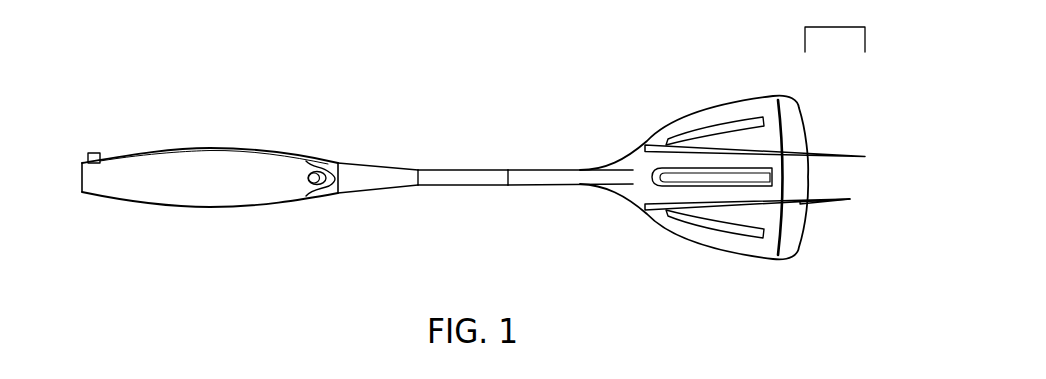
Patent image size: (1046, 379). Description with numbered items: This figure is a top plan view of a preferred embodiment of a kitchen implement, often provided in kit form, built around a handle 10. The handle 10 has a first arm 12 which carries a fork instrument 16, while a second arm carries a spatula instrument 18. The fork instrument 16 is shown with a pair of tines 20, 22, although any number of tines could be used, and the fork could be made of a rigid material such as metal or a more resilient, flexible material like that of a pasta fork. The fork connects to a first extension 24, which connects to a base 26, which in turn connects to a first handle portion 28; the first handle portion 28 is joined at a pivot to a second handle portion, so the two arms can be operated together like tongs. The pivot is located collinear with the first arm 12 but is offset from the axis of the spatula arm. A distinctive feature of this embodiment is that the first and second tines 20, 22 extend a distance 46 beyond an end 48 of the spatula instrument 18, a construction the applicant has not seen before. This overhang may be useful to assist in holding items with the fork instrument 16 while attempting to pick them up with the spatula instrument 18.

The handle 10 is at (310, 150).
The first arm 12 is at (547, 162).
The fork instrument 16 is at (851, 201).
The spatula instrument 18 is at (804, 233).
The tine 20 is at (835, 190).
The tine 22 is at (838, 145).
The first extension 24 is at (493, 175).
The base 26 is at (400, 172).
The first handle portion 28 is at (205, 148).
The distance 46 is at (835, 27).
The end 48 is at (805, 107).